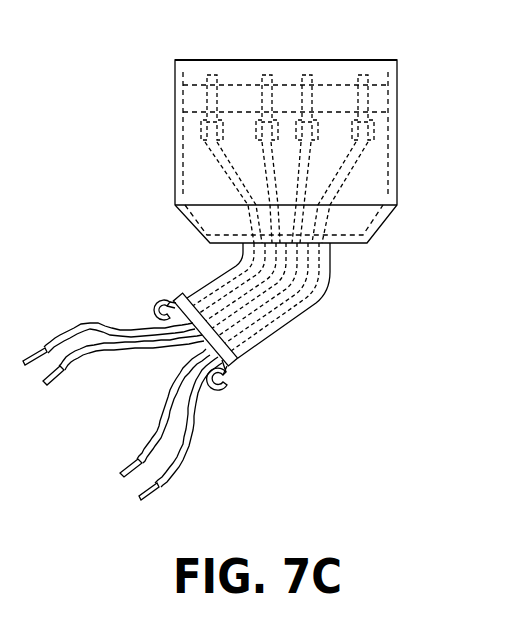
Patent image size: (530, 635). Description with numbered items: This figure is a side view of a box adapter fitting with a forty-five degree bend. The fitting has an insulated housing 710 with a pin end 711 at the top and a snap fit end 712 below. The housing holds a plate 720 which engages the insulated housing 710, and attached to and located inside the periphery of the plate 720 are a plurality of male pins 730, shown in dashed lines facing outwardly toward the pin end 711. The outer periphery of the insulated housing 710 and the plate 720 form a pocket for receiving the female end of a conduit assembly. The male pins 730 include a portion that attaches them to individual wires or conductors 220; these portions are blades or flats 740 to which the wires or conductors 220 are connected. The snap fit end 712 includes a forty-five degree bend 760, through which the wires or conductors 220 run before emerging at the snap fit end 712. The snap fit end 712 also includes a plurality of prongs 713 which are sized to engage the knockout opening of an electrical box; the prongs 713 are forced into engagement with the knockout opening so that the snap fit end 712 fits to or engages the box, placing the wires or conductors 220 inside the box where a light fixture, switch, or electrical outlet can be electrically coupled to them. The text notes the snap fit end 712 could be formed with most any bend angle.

The insulated housing 710 is at (397, 98).
The pin end 711 is at (287, 60).
The snap fit end 712 is at (182, 296).
The prongs 713 is at (218, 391).
The plate 720 is at (372, 82).
The male pins 730 is at (266, 73).
The blades or flats 740 is at (372, 123).
The 45-degree bend 760 is at (327, 293).
The wires or conductors 220 is at (193, 428).